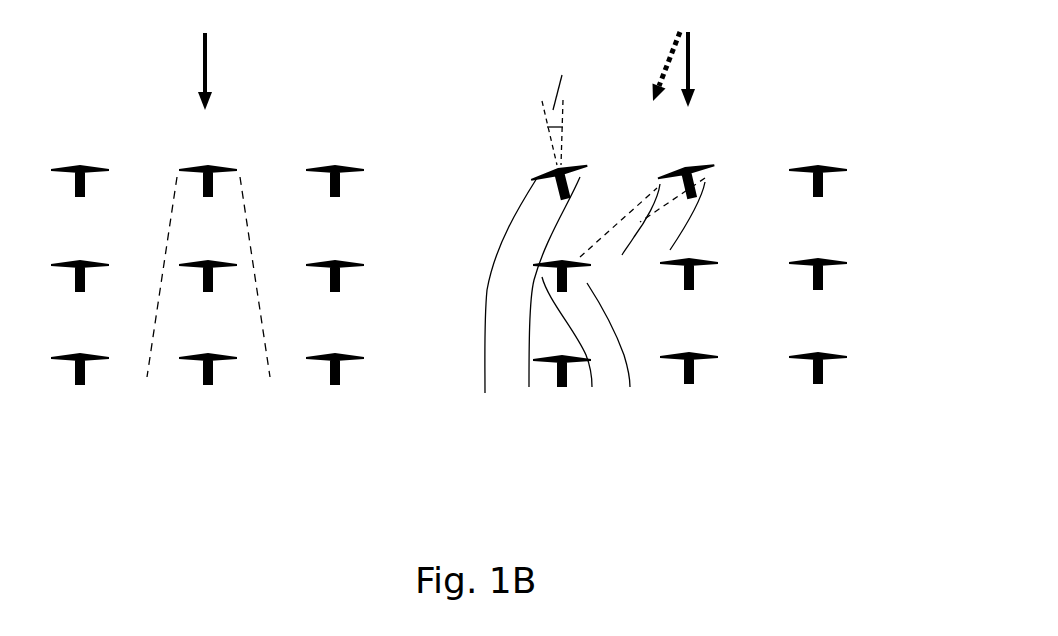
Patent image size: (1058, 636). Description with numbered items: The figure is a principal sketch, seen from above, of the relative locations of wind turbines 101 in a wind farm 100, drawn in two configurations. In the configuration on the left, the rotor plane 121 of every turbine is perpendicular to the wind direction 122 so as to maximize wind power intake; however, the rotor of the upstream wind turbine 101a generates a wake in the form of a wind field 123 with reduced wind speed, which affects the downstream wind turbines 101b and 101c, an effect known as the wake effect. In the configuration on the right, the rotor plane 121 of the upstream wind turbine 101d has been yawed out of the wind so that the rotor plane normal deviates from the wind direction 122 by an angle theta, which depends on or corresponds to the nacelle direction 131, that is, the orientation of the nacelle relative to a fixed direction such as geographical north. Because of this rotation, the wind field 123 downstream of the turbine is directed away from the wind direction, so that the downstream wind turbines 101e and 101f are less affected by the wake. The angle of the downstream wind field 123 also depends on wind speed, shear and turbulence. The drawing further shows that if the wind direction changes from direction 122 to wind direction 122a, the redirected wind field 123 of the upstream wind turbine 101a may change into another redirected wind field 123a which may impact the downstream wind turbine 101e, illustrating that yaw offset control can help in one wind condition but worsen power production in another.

The wind farm 100 is at (80, 84).
The wind turbine 101 is at (85, 397).
The upstream wind turbine 101a is at (712, 166).
The downstream wind turbine 101b is at (211, 289).
The downstream wind turbine 101c is at (210, 383).
The upstream wind turbine 101d is at (590, 177).
The downstream wind turbine 101e is at (592, 271).
The downstream wind turbine 101f is at (562, 384).
The rotor plane 121 is at (228, 163).
The wind direction 122 is at (210, 65).
The wind direction 122a is at (667, 58).
The wind field 123 is at (262, 263).
The redirected wind field 123a is at (653, 220).
The nacelle direction 131 is at (548, 125).